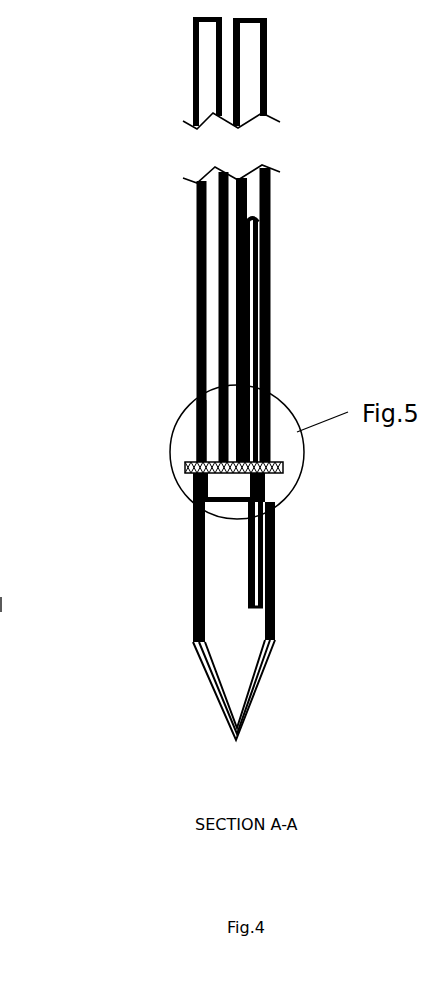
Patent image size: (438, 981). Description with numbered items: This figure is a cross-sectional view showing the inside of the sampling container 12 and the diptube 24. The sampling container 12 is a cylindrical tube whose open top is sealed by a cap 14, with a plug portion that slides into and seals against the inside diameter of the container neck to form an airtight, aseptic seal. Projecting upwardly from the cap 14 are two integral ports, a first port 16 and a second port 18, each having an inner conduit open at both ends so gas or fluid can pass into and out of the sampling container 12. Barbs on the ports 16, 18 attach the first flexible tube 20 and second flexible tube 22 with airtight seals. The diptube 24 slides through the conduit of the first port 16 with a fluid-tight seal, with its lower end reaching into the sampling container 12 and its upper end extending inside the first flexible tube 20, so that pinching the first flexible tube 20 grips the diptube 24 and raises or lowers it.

The sampling container 12 is at (193, 597).
The cap 14 is at (185, 462).
The first port 16 is at (298, 460).
The second port 18 is at (193, 408).
The first flexible tube 20 is at (270, 348).
The second flexible tube 22 is at (197, 325).
The diptube 24 is at (270, 543).